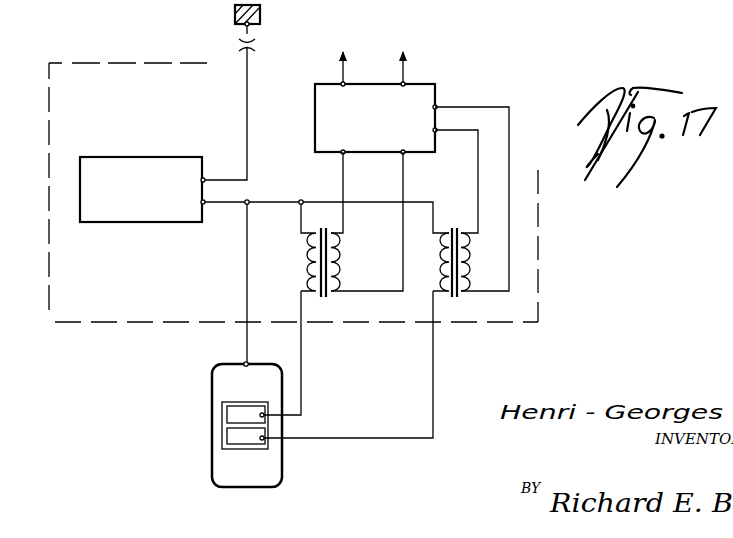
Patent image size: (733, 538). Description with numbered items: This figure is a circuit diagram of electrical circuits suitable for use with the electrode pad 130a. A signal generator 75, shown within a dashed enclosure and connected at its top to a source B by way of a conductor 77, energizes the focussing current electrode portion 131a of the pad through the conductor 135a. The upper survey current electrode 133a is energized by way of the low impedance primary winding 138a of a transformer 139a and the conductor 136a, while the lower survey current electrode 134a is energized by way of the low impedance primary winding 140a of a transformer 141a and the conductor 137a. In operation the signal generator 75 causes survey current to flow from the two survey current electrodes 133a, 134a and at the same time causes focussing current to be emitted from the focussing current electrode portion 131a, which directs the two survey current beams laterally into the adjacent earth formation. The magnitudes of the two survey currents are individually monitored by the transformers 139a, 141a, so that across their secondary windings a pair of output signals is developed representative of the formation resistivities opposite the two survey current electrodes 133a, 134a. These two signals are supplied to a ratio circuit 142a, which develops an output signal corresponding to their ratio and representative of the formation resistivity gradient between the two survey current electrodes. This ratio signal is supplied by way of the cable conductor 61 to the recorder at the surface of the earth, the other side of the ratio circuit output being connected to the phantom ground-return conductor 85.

The battery B is at (262, 12).
The conductor 77 is at (246, 103).
The signal generator 75 is at (121, 224).
The ratio circuit 142a is at (314, 117).
The phantom ground-return conductor 85 is at (340, 68).
The cable conductor 61 is at (406, 73).
The conductor 135a is at (245, 299).
The low impedance primary winding 138a is at (306, 262).
The transformer 139a is at (323, 300).
The low impedance primary winding 140a is at (440, 262).
The transformer 141a is at (454, 300).
The conductor 136a is at (302, 391).
The conductor 137a is at (432, 370).
The electrode pad 130a is at (207, 462).
The focussing current electrode portion 131a is at (240, 481).
The upper survey current electrode 133a is at (227, 418).
The lower survey current electrode 134a is at (227, 440).